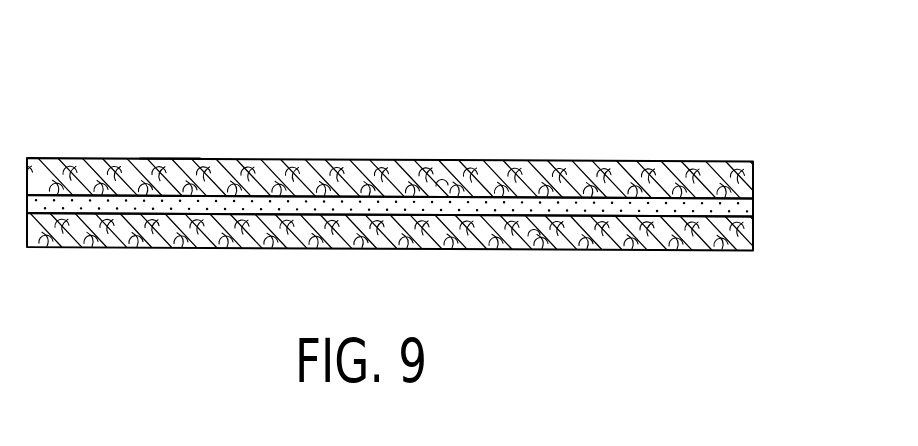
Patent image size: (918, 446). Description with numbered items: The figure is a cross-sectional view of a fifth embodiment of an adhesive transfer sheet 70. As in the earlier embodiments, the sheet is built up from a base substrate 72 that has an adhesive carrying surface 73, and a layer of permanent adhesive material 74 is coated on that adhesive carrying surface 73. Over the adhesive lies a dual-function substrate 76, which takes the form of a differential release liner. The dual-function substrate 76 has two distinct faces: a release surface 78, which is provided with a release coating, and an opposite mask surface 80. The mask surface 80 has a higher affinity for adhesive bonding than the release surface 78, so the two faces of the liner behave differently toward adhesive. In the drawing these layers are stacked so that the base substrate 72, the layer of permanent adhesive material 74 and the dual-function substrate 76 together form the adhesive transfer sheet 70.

The adhesive transfer sheet 70 is at (712, 104).
The base substrate 72 is at (163, 236).
The adhesive carrying surface 73 is at (300, 205).
The layer of permanent adhesive material 74 is at (542, 205).
The dual-function substrate 76 is at (343, 182).
The release surface 78 is at (398, 196).
The mask surface 80 is at (158, 160).